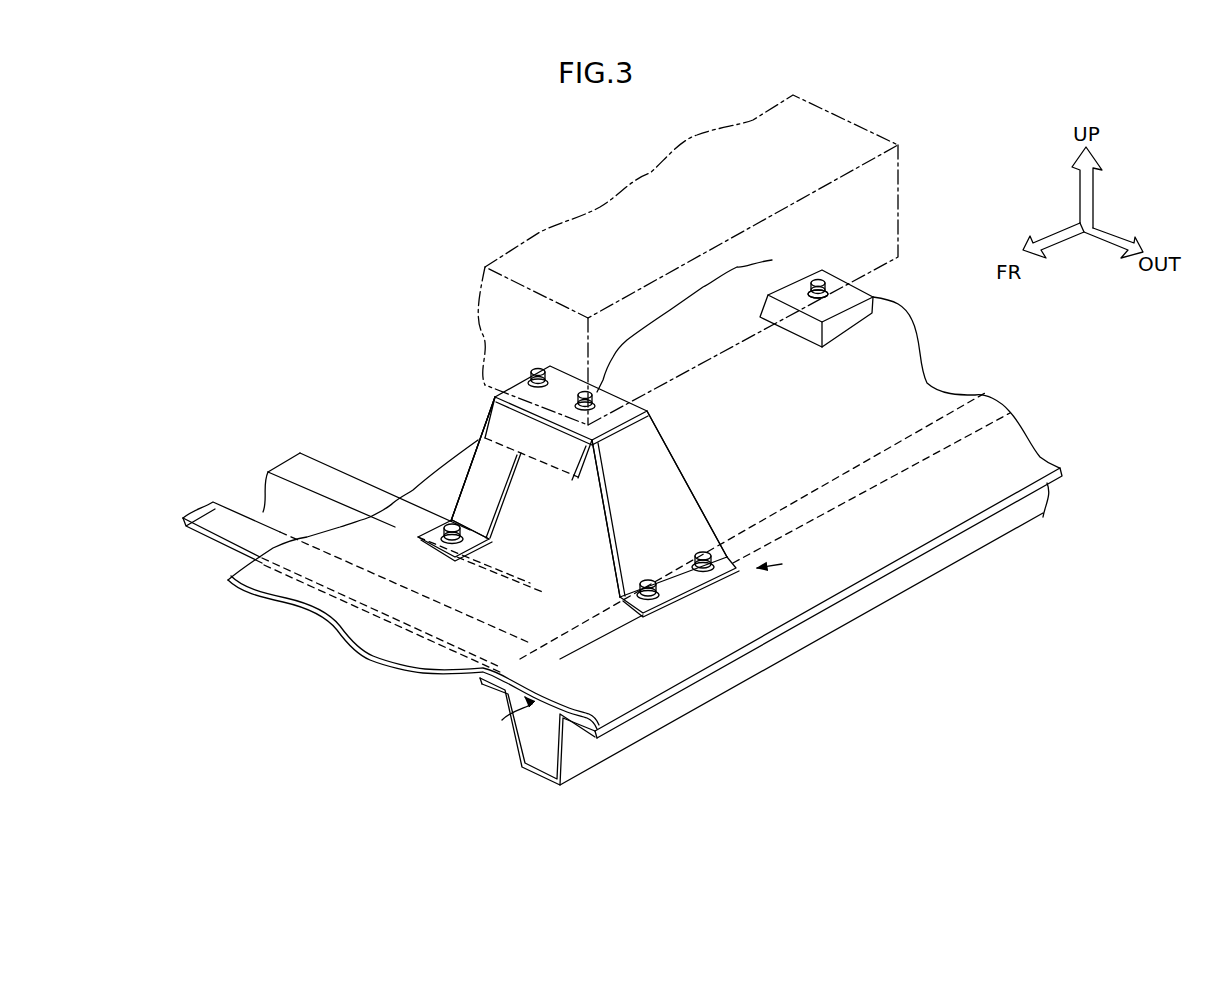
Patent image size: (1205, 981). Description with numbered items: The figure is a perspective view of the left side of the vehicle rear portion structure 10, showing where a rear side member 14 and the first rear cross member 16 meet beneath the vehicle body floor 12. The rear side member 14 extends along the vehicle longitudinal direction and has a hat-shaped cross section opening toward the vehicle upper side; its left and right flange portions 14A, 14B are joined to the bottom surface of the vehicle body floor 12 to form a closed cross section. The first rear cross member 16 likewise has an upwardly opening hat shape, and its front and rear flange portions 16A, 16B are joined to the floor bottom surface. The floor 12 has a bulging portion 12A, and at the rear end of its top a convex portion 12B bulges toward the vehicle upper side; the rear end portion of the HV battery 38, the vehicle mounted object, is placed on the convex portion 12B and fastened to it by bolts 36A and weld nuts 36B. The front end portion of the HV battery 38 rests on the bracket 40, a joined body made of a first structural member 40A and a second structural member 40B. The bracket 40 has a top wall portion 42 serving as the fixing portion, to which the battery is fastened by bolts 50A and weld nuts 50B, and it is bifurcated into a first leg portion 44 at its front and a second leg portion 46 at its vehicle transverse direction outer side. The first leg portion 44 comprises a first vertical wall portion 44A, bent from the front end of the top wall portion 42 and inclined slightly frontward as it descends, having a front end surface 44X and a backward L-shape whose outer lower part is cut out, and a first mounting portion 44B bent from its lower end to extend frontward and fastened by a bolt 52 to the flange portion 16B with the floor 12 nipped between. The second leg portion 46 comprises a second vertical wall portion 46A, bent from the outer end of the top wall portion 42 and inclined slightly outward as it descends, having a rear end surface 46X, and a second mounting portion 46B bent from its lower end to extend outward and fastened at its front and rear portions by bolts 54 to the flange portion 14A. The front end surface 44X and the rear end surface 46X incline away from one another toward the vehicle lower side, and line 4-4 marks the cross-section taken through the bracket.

The battery mounting structure 10 is at (905, 665).
The vehicle body floor 12 is at (1005, 445).
The bulging portion 12A is at (880, 336).
The convex portion 12B is at (870, 296).
The rear side member 14 is at (747, 599).
The flange portion 14A is at (497, 690).
The flange portion 14B is at (580, 729).
The first rear cross member 16 is at (355, 550).
The flange portion 16A is at (230, 522).
The flange portion 16B is at (350, 490).
The bolt 36A is at (822, 280).
The weld nut 36B is at (812, 282).
The HV battery 38 is at (900, 162).
The bracket 40 is at (594, 467).
The first structural member 40A is at (468, 433).
The second structural member 40B is at (582, 527).
The top wall portion 42 is at (613, 400).
The first leg portion 44 is at (437, 492).
The first vertical wall portion 44A is at (473, 487).
The front end surface 44X is at (447, 523).
The first mounting portion 44B is at (455, 559).
The second leg portion 46 is at (713, 514).
The second vertical wall portion 46A is at (670, 493).
The rear end surface 46X is at (675, 463).
The second mounting portion 46B is at (678, 582).
The bolt 50A is at (580, 385).
The weld nut 50B is at (533, 377).
The bolt 52 is at (470, 526).
The bolt 54 is at (703, 553).
The line 4- 4 is at (641, 647).